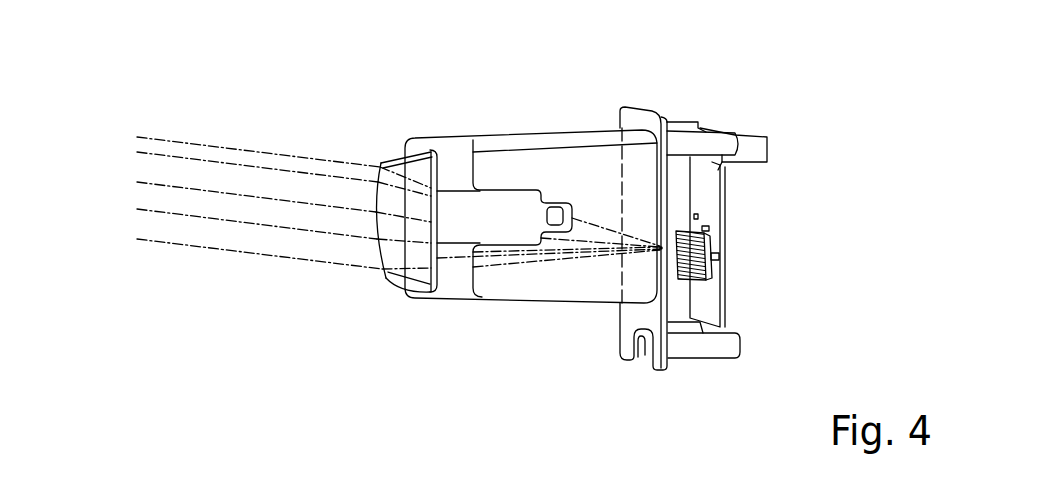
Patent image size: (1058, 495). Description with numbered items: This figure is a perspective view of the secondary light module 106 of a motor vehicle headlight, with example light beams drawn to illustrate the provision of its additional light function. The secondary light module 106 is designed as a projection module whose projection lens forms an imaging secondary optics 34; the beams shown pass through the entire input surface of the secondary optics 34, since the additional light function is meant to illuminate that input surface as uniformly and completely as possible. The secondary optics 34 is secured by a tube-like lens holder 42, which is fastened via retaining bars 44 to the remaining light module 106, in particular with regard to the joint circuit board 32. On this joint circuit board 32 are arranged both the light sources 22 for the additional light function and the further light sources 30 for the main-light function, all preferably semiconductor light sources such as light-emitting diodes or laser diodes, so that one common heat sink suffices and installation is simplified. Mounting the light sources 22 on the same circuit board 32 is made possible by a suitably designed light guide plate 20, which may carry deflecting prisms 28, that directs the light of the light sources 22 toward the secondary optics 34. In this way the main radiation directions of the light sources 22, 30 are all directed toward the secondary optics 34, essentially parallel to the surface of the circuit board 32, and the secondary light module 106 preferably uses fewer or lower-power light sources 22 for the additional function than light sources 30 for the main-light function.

The secondary light module 106 is at (684, 86).
The joint circuit board 32 is at (710, 190).
The light sources 30 is at (706, 212).
The light guide plate 20 is at (707, 242).
The light sources 22 is at (720, 257).
The deflecting prisms 28 is at (710, 262).
The secondary optics 34 is at (392, 252).
The lens holder 42 is at (518, 228).
The retaining bars 44 is at (700, 348).